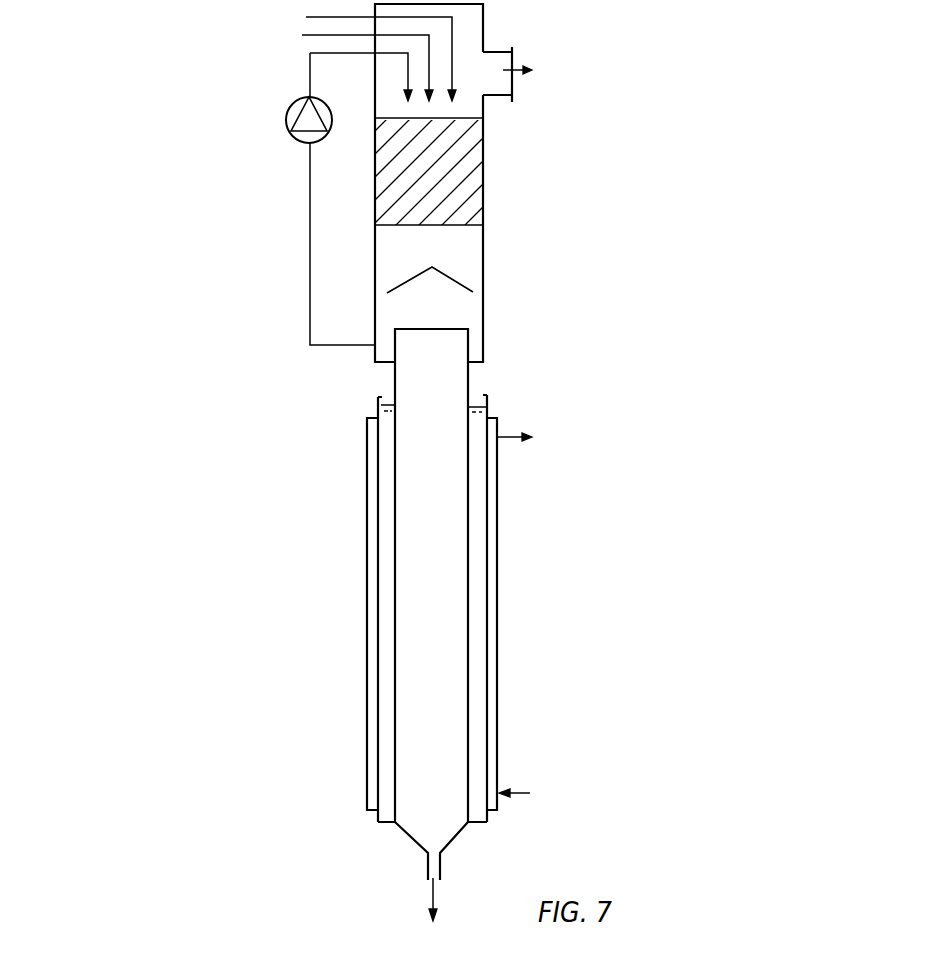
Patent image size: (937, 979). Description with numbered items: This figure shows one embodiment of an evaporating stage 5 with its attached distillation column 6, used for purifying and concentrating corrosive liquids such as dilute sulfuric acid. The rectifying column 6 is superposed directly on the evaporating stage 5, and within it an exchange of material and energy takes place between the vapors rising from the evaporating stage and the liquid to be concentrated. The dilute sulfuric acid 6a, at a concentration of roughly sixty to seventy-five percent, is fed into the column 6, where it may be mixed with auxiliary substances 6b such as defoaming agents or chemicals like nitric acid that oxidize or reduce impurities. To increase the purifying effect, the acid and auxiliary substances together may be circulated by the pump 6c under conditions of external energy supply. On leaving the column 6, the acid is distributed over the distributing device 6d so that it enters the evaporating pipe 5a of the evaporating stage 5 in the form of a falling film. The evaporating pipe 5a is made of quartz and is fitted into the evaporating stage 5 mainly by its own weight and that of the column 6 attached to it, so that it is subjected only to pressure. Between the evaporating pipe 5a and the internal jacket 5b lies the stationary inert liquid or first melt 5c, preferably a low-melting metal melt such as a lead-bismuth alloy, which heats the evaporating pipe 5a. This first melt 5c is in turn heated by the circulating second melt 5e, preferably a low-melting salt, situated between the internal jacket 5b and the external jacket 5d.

The evaporating stage 5 is at (365, 596).
The evaporating pipe 5a is at (395, 382).
The internal jacket 5b is at (487, 530).
The stationary inert liquid or first melt 5c is at (476, 569).
The external jacket 5d is at (497, 600).
The circulating melt (second melt) 5e is at (492, 636).
The distillation column 6 is at (483, 172).
The dilute sulfuric acid 6a is at (304, 52).
The auxiliary substances 6b is at (228, 63).
The pump 6c is at (300, 105).
The distributing device 6d is at (425, 275).